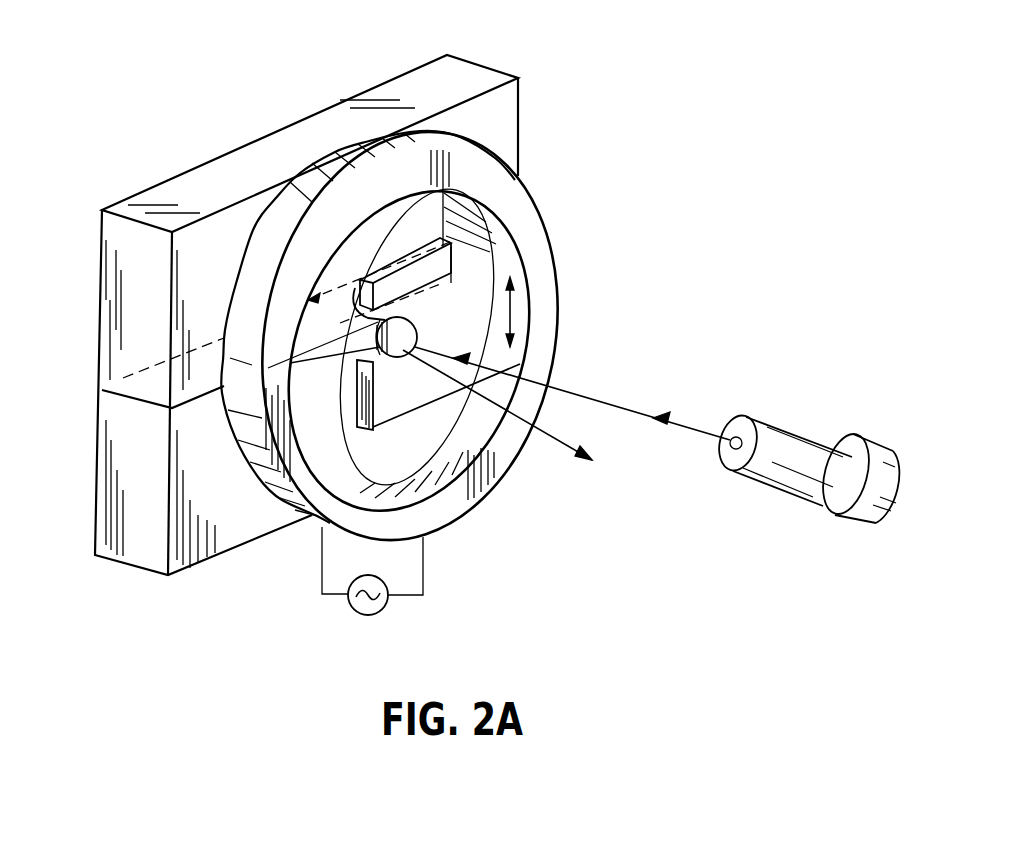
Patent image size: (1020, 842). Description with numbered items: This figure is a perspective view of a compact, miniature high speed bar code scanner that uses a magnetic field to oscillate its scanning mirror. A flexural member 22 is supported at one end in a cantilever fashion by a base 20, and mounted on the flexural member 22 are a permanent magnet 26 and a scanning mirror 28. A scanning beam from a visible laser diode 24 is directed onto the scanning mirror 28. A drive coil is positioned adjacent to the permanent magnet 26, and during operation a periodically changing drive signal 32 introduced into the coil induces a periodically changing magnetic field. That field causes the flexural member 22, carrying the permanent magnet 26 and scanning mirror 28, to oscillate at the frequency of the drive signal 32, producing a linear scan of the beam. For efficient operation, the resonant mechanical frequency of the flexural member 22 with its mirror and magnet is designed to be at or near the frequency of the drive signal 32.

The base 20 is at (100, 355).
The flexural member 22 is at (343, 343).
The visible laser diode 24 is at (808, 434).
The permanent magnet 26 is at (440, 172).
The scanning mirror 28 is at (472, 250).
The periodically changing drive signal 32 is at (383, 580).